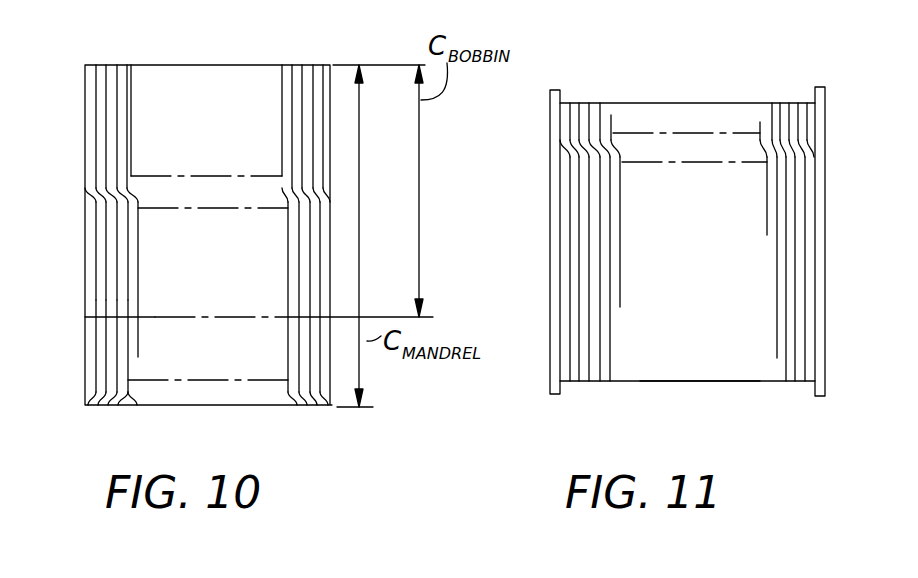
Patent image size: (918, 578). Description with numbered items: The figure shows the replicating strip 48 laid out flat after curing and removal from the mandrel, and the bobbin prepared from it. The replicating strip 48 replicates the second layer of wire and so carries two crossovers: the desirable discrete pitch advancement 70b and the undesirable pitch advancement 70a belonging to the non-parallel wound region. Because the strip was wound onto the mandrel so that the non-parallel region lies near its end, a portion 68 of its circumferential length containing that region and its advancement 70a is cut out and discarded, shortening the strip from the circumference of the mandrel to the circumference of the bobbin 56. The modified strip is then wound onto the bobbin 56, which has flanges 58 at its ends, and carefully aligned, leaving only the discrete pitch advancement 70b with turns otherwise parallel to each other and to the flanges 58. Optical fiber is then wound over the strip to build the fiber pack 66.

In FIG. 10, the replicating strip 48 is at (132, 407).
In FIG. 11, the bobbin 56 is at (700, 383).
In FIG. 11, the flanges 58 is at (549, 380).
In FIG. 11, the fiber pack 66 is at (643, 362).
In FIG. 10, the portion of circumferential length 68 is at (83, 317).
In FIG. 10, the pitch advancement 70a is at (335, 380).
In FIG. 10, the discrete pitch advancement 70b is at (83, 173).
In FIG. 11, the discrete pitch advancement 70b is at (548, 135).